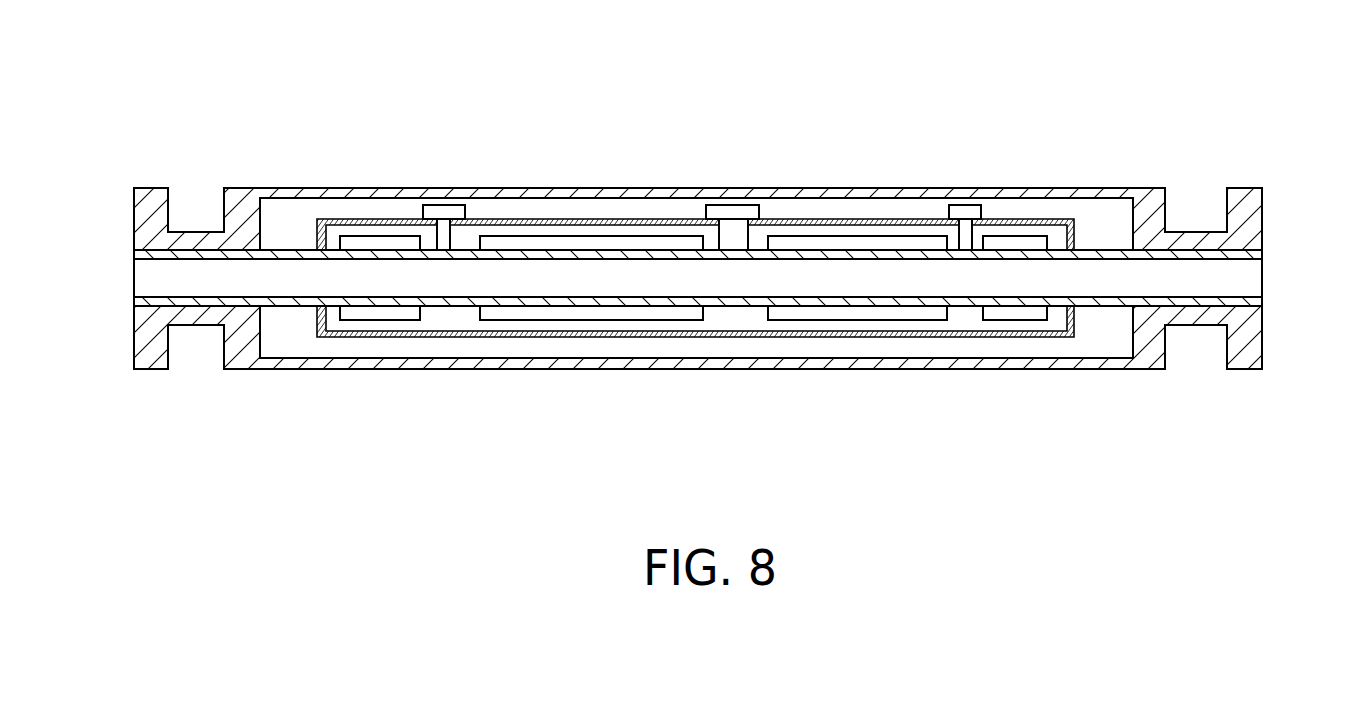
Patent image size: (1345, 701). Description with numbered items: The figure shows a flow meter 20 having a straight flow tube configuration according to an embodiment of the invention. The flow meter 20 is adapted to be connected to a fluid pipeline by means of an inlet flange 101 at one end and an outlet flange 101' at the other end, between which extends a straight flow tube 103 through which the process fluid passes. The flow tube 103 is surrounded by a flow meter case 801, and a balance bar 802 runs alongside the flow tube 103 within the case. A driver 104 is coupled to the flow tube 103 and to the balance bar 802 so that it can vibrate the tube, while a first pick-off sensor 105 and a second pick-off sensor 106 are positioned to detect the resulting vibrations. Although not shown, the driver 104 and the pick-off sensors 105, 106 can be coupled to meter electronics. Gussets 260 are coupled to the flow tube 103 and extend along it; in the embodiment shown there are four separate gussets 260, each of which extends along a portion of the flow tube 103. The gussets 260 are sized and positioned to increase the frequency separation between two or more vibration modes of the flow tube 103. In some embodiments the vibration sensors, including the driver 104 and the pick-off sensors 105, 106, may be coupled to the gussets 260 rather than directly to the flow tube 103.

The flow meter 20 is at (1276, 75).
The inlet flange 101 is at (147, 240).
The outlet flange 101' is at (1268, 256).
The straight flow tube 103 is at (1102, 308).
The driver 104 is at (733, 210).
The first pick-off sensor 105 is at (444, 210).
The second pick-off sensor 106 is at (963, 210).
The gussets 260 is at (380, 312).
The flow meter case 801 is at (920, 370).
The balance bar 802 is at (611, 218).